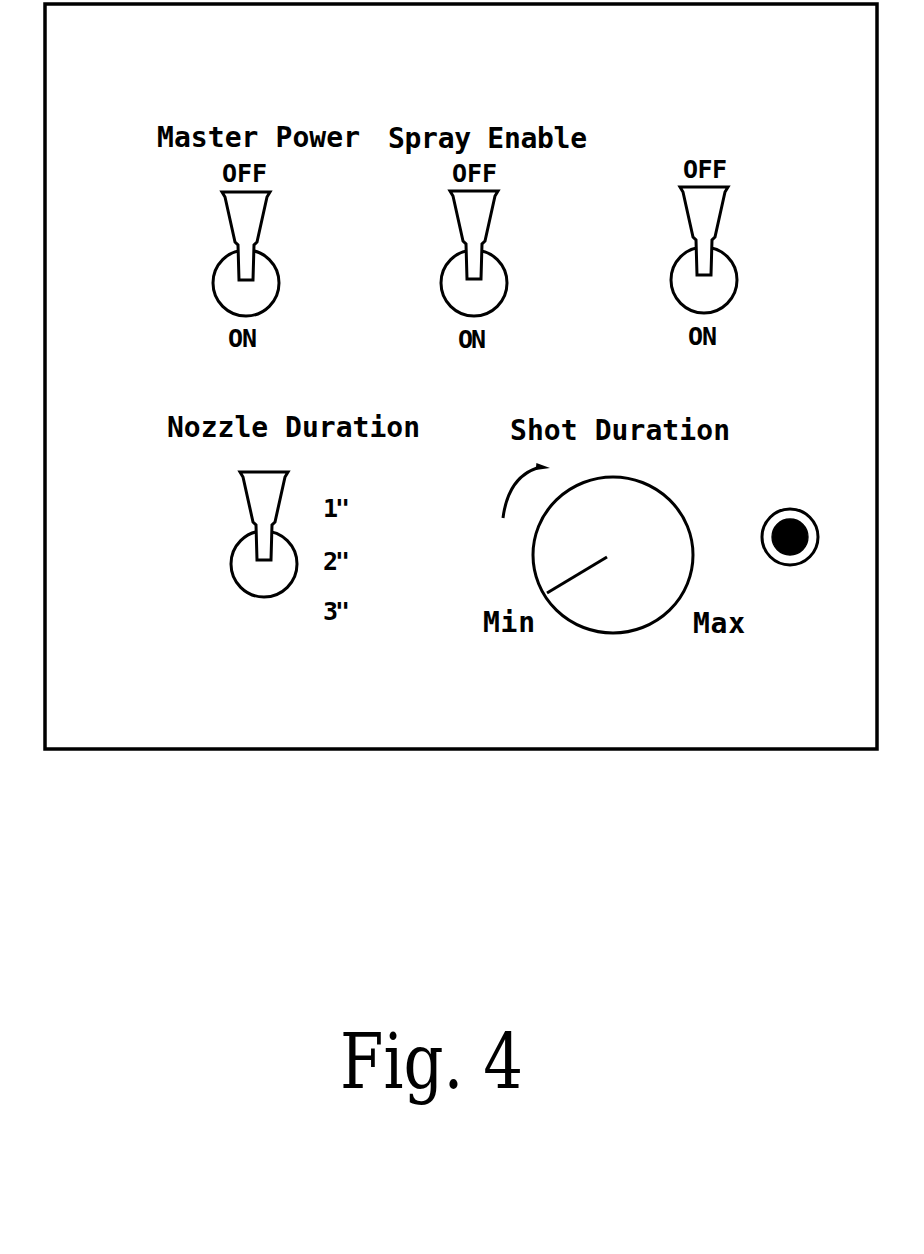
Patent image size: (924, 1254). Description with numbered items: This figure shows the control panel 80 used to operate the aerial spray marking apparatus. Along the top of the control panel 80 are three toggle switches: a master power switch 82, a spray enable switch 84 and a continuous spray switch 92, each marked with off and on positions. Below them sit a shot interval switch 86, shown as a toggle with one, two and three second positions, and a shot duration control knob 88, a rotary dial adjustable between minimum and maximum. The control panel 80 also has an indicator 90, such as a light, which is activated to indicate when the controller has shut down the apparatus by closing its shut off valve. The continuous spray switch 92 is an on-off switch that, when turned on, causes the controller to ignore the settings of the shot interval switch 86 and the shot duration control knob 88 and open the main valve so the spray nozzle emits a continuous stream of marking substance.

The control panel 80 is at (461, 437).
The master power switch 82 is at (179, 270).
The spray enable switch 84 is at (407, 271).
The shot interval switch 86 is at (196, 564).
The shot duration control knob 88 is at (534, 579).
The indicator 90 is at (762, 617).
The continuous spray switch 92 is at (641, 266).